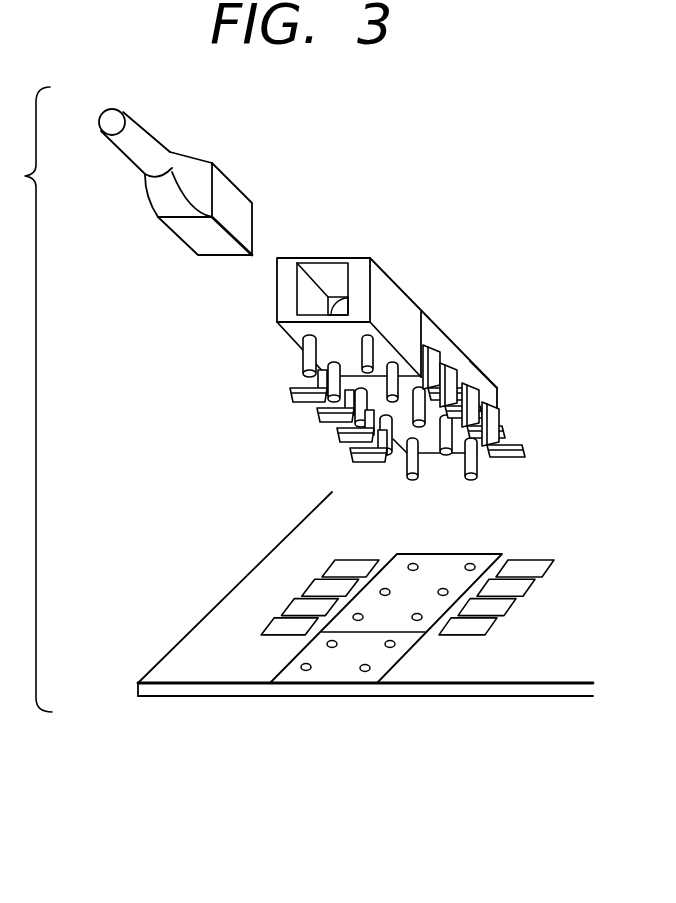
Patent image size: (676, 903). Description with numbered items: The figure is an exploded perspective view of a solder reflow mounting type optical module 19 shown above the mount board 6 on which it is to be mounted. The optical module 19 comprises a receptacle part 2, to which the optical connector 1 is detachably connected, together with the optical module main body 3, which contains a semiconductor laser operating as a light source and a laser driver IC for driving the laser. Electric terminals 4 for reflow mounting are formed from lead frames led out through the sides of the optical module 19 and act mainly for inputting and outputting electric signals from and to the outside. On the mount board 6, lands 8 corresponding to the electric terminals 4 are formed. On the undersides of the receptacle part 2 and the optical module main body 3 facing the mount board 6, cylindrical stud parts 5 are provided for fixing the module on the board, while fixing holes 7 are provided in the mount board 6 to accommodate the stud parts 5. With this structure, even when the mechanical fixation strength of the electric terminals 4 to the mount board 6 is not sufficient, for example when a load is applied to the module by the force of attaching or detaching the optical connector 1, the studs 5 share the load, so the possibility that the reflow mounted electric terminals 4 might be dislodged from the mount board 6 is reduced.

The optical connector 1 is at (243, 205).
The receptacle part 2 is at (400, 302).
The optical module main body 3 is at (457, 355).
The electric terminals 4 is at (513, 458).
The stud parts 5 is at (304, 360).
The mount board 6 is at (190, 665).
The fixing holes 7 is at (303, 663).
The lands 8 is at (532, 567).
The optical module 19 is at (544, 338).